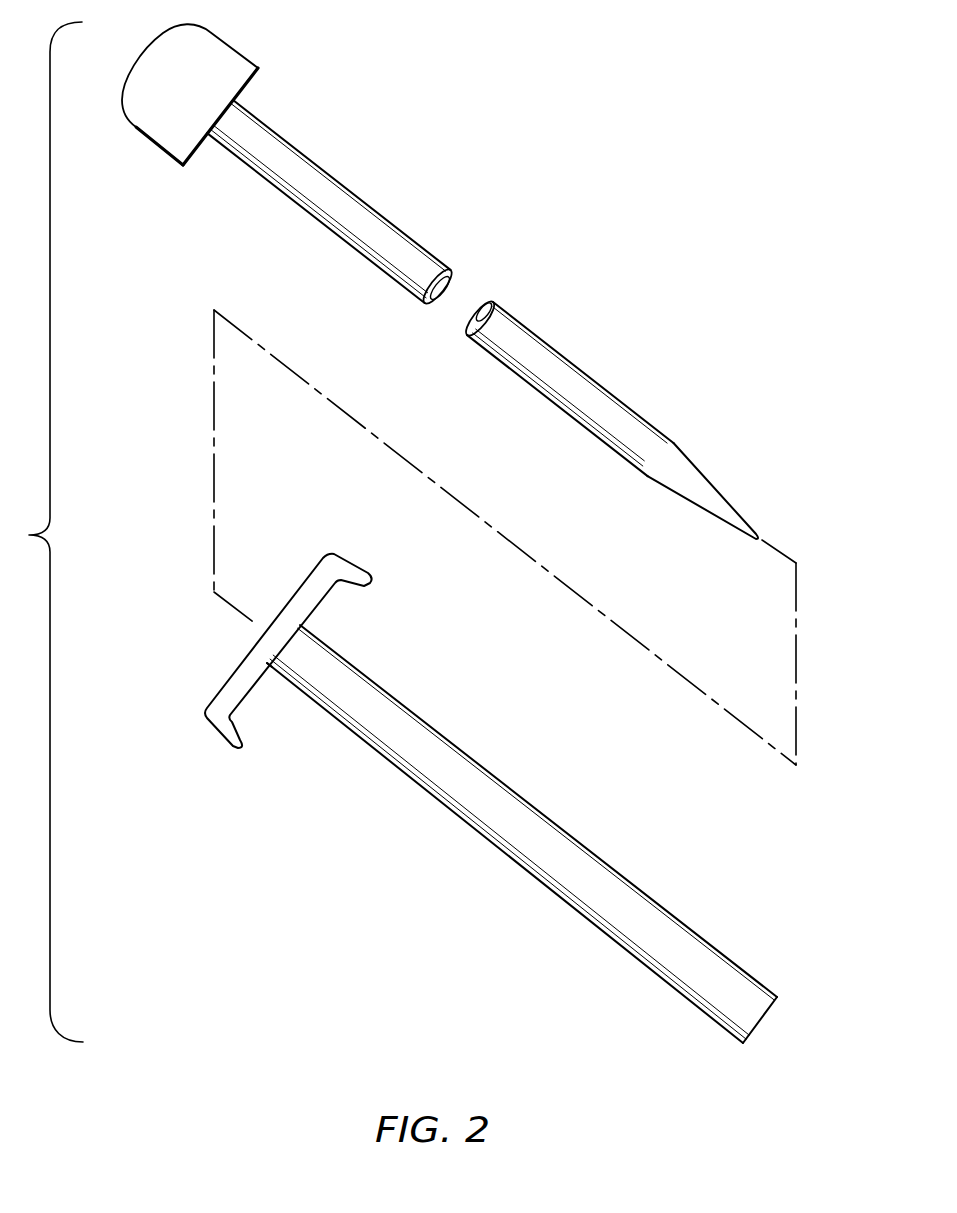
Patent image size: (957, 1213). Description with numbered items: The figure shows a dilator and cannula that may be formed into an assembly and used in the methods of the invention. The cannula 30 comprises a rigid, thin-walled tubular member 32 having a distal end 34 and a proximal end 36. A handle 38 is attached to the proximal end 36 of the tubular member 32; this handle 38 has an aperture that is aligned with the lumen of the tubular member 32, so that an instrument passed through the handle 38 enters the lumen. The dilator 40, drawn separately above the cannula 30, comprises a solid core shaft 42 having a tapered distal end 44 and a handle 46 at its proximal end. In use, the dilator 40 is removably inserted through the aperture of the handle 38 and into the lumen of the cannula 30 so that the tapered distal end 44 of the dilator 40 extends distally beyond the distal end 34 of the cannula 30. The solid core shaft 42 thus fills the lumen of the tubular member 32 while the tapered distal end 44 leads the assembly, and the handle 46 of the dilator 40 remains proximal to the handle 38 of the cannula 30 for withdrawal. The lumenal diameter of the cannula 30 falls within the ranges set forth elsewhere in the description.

The cannula 30 is at (460, 790).
The tubular member 32 is at (552, 834).
The distal end 34 is at (780, 998).
The proximal end 36 is at (265, 670).
The handle 38 is at (223, 682).
The dilator 40 is at (418, 253).
The solid core shaft 42 is at (627, 420).
The tapered distal end 44 is at (722, 485).
The handle 46 is at (229, 58).